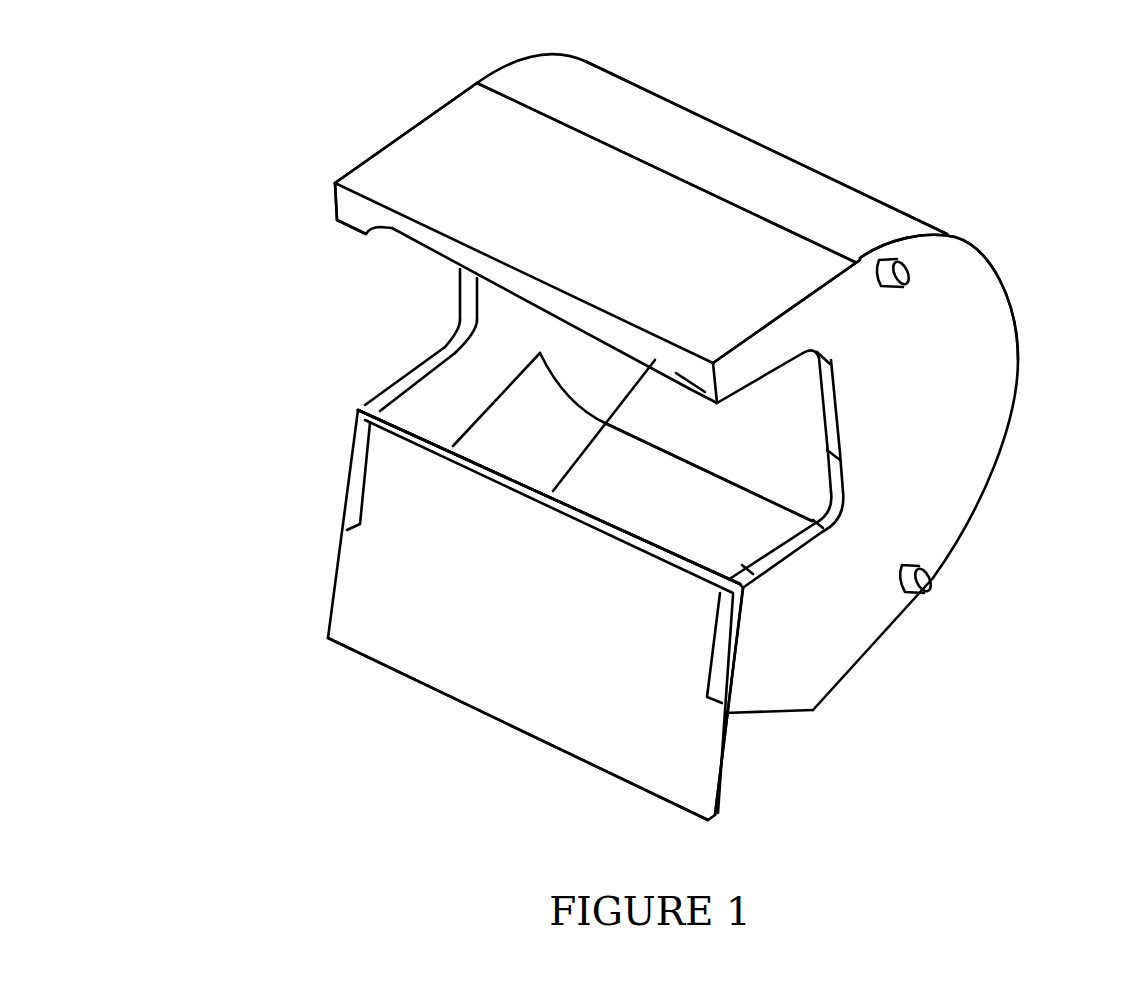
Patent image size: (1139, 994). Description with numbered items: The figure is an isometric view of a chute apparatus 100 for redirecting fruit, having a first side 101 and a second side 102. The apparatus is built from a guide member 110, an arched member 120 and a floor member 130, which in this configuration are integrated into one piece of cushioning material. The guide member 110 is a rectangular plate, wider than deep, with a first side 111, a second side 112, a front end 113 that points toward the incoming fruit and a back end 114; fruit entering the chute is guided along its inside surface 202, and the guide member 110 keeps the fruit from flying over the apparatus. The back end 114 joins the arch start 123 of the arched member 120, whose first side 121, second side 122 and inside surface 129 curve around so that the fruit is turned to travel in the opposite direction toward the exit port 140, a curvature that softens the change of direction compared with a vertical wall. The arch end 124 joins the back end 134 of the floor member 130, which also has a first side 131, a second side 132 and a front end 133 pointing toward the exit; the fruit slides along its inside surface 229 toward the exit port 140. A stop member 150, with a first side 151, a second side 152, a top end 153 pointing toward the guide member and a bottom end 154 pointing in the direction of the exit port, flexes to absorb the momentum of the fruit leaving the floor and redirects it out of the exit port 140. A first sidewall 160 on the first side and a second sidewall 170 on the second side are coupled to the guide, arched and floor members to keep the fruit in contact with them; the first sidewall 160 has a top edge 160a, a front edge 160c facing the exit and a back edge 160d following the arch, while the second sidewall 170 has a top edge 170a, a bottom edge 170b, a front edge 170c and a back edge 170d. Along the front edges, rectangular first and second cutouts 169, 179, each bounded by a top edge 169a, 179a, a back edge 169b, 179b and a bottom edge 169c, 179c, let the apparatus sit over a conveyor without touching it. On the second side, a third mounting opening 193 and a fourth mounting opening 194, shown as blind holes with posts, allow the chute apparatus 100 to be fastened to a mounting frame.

The chute apparatus 100 is at (170, 225).
The first side 101 is at (348, 172).
The second side 102 is at (797, 300).
The guide member 110 is at (593, 302).
The first side 111 is at (428, 118).
The second side 112 is at (832, 286).
The front end 113 is at (435, 255).
The back end 114 is at (698, 180).
The arched member 120 is at (1022, 282).
The first side 121 is at (528, 57).
The second side 122 is at (1020, 390).
The arch start 123 is at (606, 137).
The arch end 124 is at (715, 465).
The inside surface 129 is at (828, 360).
The floor member 130 is at (734, 516).
The first side 131 is at (498, 413).
The second side 132 is at (812, 505).
The front end 133 is at (655, 542).
The back end 134 is at (640, 430).
The exit port 140 is at (749, 795).
The stop member 150 is at (535, 615).
The first side 151 is at (330, 592).
The second side 152 is at (732, 755).
The top end 153 is at (580, 505).
The bottom end 154 is at (518, 735).
The first sidewall 160 is at (447, 340).
The top edge 160a is at (334, 205).
The front edge 160c is at (488, 303).
The back edge 160d is at (578, 58).
The first cutout 169 is at (495, 311).
The top edge 169a is at (389, 233).
The back edge 169b is at (488, 318).
The bottom edge 169c is at (435, 352).
The second sidewall 170 is at (886, 525).
The top edge 170a is at (746, 335).
The bottom edge 170b is at (890, 638).
The front edge 170c is at (750, 662).
The back edge 170d is at (1020, 440).
The second cutout 179 is at (834, 484).
The top edge 179a is at (798, 402).
The back edge 179b is at (848, 482).
The bottom edge 179c is at (760, 580).
The third mounting opening 193 is at (878, 260).
The fourth mounting opening 194 is at (915, 562).
The inside surface 202 is at (628, 348).
The inside surface 229 is at (790, 540).